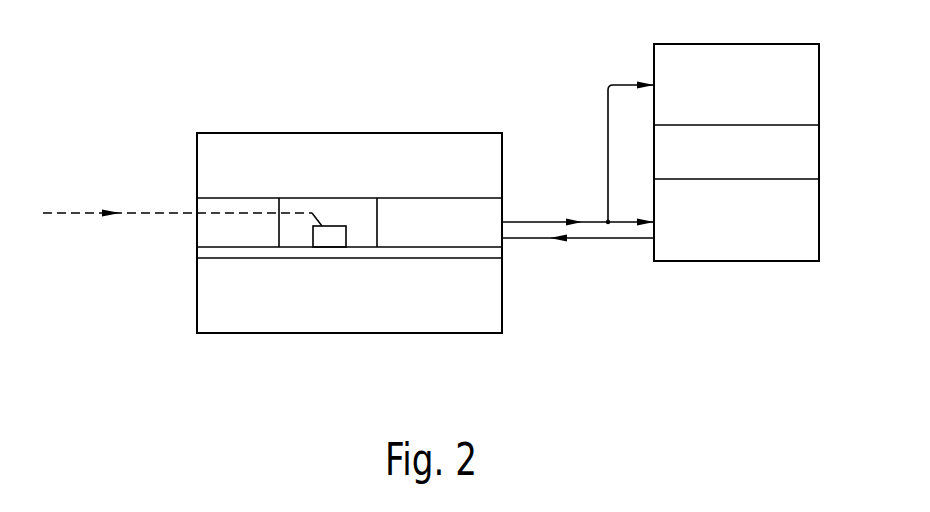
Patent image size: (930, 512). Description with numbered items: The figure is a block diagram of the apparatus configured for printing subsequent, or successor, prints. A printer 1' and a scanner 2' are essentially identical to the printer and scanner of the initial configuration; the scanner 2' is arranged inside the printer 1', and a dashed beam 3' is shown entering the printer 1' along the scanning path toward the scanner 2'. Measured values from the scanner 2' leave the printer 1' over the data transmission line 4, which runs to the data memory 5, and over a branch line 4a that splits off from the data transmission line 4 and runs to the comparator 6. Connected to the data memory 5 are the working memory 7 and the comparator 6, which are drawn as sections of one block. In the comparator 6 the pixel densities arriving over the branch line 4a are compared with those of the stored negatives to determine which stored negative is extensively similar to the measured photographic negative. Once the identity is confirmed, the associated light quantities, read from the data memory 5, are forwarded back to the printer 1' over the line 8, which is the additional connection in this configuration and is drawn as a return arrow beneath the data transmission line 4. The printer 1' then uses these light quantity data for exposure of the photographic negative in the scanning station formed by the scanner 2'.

The printer 1' is at (349, 194).
The scanner 2' is at (346, 197).
The incident beam 3' is at (182, 184).
The data transmission line 4 is at (548, 222).
The branch line 4a is at (608, 152).
The data memory 5 is at (767, 262).
The comparator 6 is at (820, 88).
The working memory 7 is at (820, 210).
The line 8 is at (615, 240).